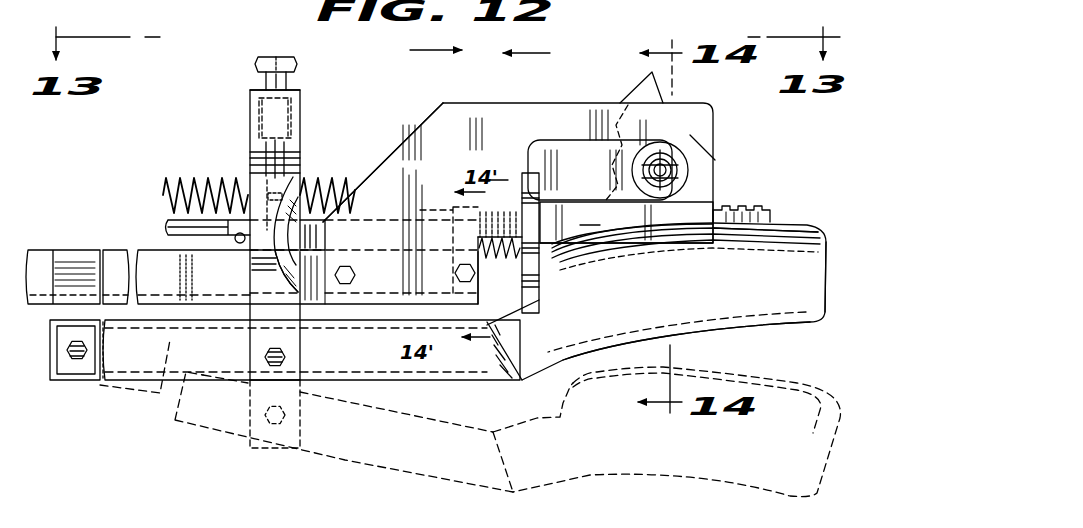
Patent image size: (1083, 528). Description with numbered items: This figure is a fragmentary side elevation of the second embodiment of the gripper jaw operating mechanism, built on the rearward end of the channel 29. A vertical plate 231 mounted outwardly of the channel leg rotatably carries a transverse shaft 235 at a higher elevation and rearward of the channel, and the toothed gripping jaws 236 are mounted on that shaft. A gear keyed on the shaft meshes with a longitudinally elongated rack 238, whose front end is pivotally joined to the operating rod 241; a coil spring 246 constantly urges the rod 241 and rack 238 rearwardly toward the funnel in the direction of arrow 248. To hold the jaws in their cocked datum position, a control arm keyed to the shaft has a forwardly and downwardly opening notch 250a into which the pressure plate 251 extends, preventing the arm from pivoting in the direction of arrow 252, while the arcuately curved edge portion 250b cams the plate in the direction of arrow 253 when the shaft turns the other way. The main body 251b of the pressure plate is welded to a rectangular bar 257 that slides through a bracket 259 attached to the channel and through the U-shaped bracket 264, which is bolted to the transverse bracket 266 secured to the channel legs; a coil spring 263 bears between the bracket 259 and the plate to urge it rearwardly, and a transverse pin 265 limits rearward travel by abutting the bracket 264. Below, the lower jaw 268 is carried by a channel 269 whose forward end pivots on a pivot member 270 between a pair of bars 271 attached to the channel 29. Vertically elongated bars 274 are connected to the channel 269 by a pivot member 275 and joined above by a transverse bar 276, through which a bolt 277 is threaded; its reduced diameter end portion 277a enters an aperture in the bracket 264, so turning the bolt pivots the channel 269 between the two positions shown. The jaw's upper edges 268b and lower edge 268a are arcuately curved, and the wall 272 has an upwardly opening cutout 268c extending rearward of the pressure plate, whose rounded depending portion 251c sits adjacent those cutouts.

The channel 29 is at (118, 258).
The vertical plate 231 is at (707, 133).
The transverse shaft 235 is at (672, 167).
The toothed gripping jaws 236 is at (634, 103).
The rack 238 is at (752, 208).
The operating rod 241 is at (165, 226).
The coil spring 246 is at (180, 178).
The arrow 248 is at (442, 53).
The notch 250a is at (609, 156).
The arcuately curved edge portion 250b is at (530, 158).
The pressure plate 251 is at (542, 224).
The main body of pressure plate 251b is at (520, 170).
The depending portion 251c is at (531, 300).
The arrow 252 is at (668, 124).
The arrow 253 is at (524, 55).
The rectangular bar 257 is at (373, 218).
The bracket 259 is at (453, 210).
The coil spring 263 is at (508, 260).
The U-shaped bracket 264 is at (287, 230).
The transverse pin 265 is at (240, 246).
The transverse bracket 266 is at (294, 262).
The lower jaw 268 is at (802, 216).
The lower edge 268a is at (738, 324).
The upper longitudinal edges 268b is at (803, 240).
The cutouts 268c is at (560, 282).
The channel 269 is at (374, 380).
The pivot member 270 is at (80, 360).
The bars 271 is at (72, 262).
The wall 272 is at (762, 301).
The vertically elongated bars 274 is at (293, 146).
The pivot member 275 is at (303, 355).
The transverse bar 276 is at (297, 102).
The bolt 277 is at (256, 62).
The reduced diameter end portion 277a is at (273, 200).